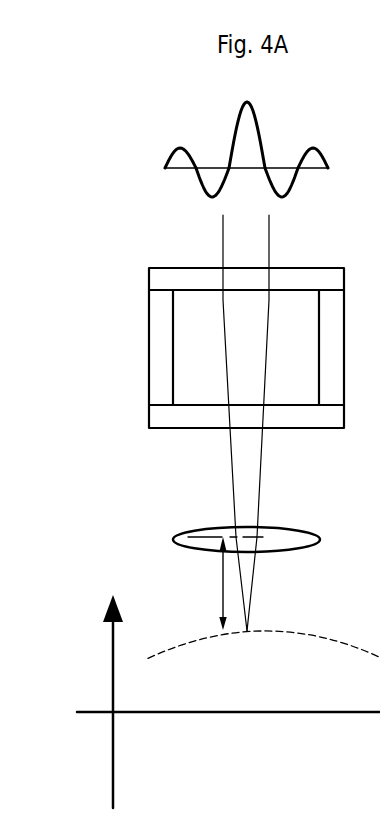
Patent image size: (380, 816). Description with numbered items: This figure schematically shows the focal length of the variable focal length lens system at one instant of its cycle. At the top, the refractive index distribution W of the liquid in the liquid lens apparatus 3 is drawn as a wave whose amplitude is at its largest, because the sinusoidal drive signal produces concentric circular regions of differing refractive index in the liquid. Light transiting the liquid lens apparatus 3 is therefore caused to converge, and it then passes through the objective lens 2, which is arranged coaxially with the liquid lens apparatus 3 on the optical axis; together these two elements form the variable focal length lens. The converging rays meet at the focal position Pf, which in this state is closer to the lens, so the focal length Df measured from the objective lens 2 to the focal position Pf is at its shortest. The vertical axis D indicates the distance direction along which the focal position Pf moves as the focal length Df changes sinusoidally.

The refractive index distribution W is at (178, 148).
The liquid lens apparatus 3 is at (121, 252).
The objective lens 2 is at (162, 526).
The focal length Df is at (205, 583).
The distance axis D is at (225, 701).
The focal position Pf is at (247, 631).